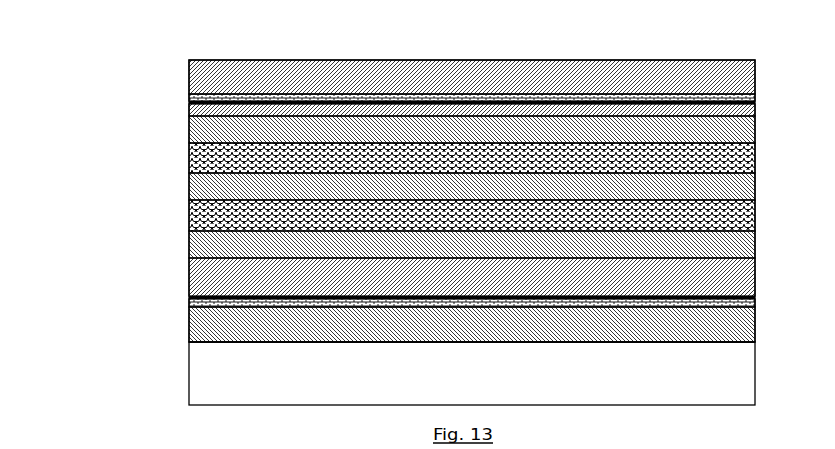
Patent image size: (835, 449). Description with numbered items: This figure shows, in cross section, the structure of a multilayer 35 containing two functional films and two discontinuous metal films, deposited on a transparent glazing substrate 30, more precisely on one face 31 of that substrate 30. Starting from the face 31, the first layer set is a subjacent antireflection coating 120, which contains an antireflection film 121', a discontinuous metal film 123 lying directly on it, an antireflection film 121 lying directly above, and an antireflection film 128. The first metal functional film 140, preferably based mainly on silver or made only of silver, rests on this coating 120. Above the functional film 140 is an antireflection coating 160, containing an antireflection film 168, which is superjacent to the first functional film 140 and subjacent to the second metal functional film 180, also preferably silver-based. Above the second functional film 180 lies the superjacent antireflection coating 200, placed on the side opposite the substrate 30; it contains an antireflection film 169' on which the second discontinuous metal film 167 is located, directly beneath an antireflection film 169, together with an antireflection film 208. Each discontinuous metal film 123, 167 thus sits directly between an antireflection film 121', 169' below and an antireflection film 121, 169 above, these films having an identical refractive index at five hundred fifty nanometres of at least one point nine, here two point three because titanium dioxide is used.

The multilayer 35 is at (209, 47).
The antireflection film 169 is at (409, 76).
The discontinuous metal film 167 is at (181, 94).
The antireflection film 169' is at (396, 114).
The antireflection film 208 is at (200, 119).
The functional film 180 is at (200, 155).
The antireflection film 168 is at (200, 185).
The functional film 140 is at (200, 213).
The antireflection film 128 is at (200, 246).
The antireflection film 121 is at (435, 277).
The discontinuous metal film 123 is at (200, 292).
The antireflection film 121' is at (426, 324).
The transparent glazing substrate 30 is at (474, 361).
The face 31 is at (710, 334).
The antireflection coating 200 is at (758, 52).
The antireflection coating 160 is at (758, 167).
The antireflection coating 120 is at (758, 223).